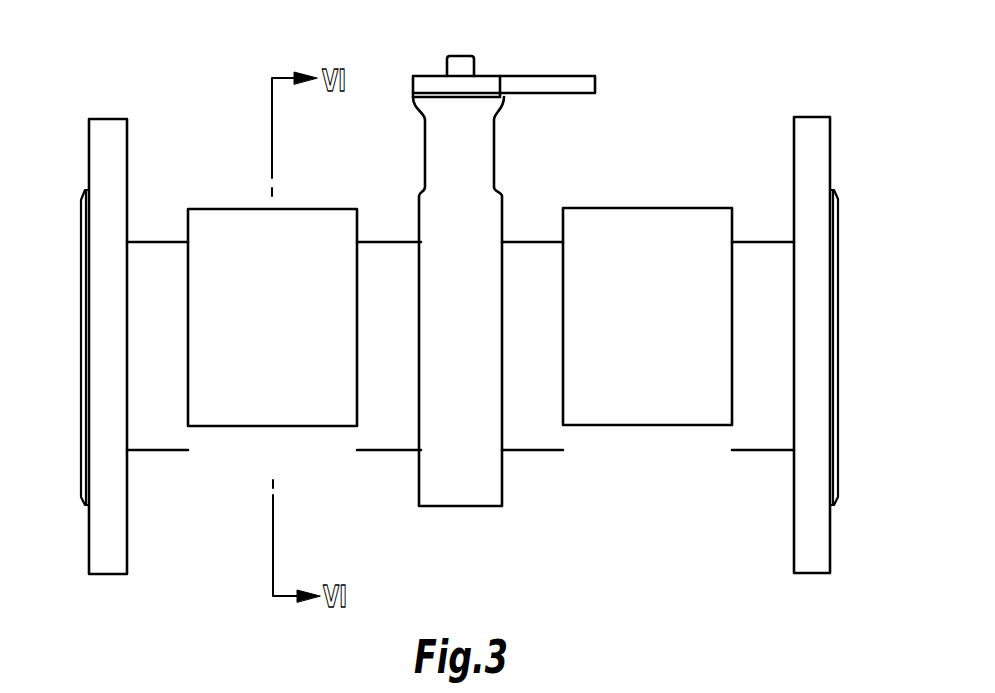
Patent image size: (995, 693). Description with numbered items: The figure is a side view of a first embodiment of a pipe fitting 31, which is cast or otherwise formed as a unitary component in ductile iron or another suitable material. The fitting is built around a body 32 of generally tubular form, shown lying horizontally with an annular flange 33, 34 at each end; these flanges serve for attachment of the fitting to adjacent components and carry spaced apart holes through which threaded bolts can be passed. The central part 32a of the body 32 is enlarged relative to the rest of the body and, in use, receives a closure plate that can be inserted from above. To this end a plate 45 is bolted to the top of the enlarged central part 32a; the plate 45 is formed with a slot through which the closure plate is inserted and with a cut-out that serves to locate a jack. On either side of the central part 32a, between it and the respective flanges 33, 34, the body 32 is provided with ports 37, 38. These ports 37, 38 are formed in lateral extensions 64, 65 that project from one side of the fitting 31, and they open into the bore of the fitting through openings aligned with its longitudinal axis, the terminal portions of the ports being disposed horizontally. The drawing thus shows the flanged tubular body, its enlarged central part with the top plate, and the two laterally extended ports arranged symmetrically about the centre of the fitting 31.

The pipe fitting 31 is at (192, 511).
The body 32 is at (542, 437).
The central part 32a is at (465, 492).
The annular flange 33 is at (105, 158).
The annular flange 34 is at (815, 157).
The port 37 is at (692, 207).
The port 38 is at (218, 208).
The plate 45 is at (490, 74).
The lateral extension 64 is at (595, 325).
The lateral extension 65 is at (213, 325).